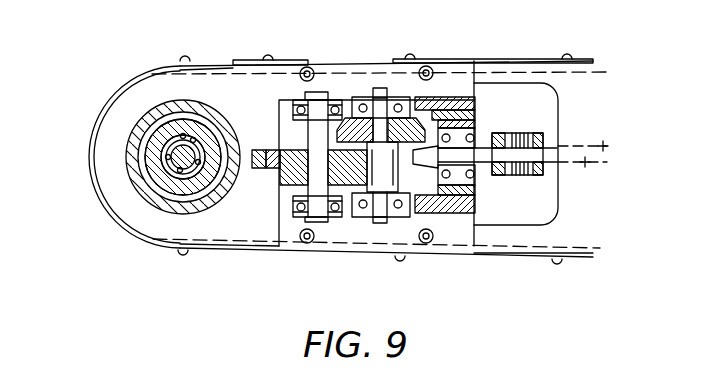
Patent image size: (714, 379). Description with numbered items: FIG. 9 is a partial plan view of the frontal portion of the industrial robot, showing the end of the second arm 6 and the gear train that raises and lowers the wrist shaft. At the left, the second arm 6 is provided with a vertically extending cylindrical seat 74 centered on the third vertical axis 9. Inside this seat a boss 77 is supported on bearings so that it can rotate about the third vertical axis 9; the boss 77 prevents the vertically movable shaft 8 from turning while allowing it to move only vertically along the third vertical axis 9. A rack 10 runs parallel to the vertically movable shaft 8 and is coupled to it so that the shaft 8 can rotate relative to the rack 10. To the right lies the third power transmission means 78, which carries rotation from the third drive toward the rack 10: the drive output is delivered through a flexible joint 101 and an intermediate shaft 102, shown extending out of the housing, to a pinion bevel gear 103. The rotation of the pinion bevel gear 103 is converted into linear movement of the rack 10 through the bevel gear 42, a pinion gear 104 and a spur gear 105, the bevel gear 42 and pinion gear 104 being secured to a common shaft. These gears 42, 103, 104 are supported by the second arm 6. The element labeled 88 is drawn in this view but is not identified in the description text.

The second arm 6 is at (243, 245).
The vertically movable shaft 8 is at (165, 147).
The third vertical axis 9 is at (178, 180).
The rack 10 is at (252, 168).
The bevel gear 42 is at (343, 137).
The cylindrical seat 74 is at (203, 213).
The boss 77 is at (147, 165).
The third power transmission means 78 is at (585, 167).
The gearbox housing 88 is at (268, 143).
The flexible joint 101 is at (515, 175).
The intermediate shaft 102 is at (604, 141).
The pinion bevel gear 103 is at (425, 155).
The pinion gear 104 is at (378, 172).
The spur gear 105 is at (292, 147).